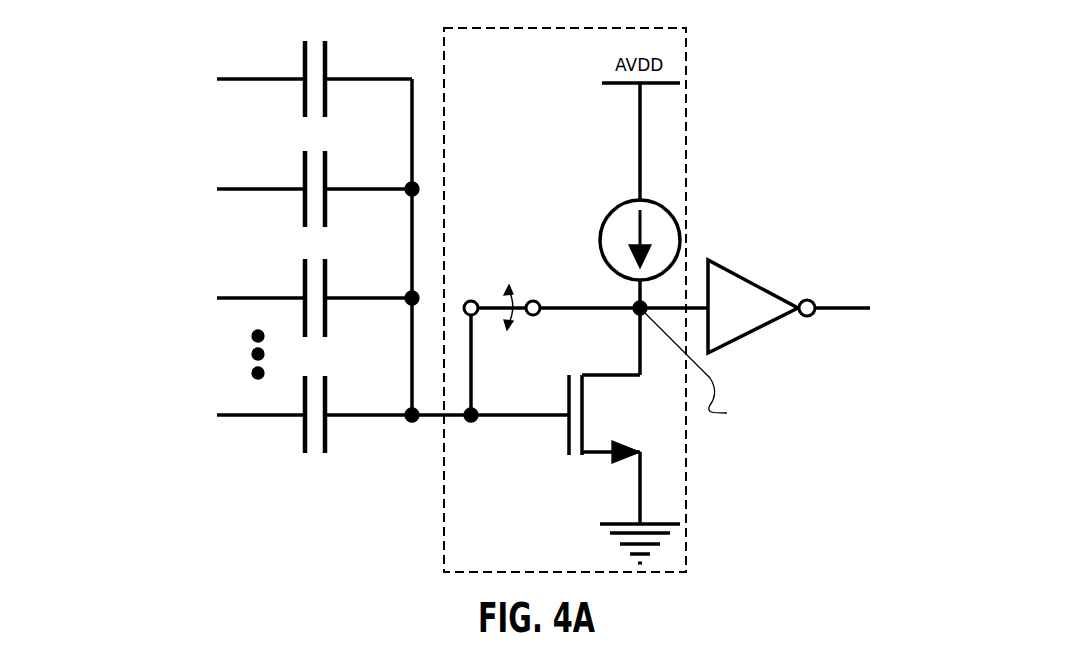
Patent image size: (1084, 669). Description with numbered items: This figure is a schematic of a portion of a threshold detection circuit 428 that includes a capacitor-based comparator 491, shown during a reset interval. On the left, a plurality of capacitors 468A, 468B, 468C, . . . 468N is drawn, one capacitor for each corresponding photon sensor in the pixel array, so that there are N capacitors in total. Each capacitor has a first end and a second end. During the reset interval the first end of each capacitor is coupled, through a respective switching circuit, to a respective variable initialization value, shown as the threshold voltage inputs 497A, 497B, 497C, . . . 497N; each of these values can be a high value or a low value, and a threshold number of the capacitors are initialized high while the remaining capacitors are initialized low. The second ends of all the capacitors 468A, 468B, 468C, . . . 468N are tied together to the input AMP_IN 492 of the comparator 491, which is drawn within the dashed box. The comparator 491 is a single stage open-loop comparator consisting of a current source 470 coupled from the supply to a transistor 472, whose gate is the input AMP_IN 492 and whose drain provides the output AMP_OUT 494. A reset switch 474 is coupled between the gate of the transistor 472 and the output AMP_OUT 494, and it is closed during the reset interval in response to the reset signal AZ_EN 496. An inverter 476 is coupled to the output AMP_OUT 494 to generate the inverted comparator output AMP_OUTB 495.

The threshold detection circuit 428 is at (918, 32).
The variable initialization value VTH[0] 497A is at (148, 60).
The variable initialization value VTH[1] 497B is at (148, 172).
The variable initialization value VTH[2] 497C is at (148, 282).
The variable initialization value VTH[N-1] 497N is at (146, 400).
The capacitor 468A is at (328, 53).
The capacitor 468B is at (328, 163).
The capacitor 468C is at (328, 270).
The capacitor 468N is at (328, 382).
The comparator 491 is at (688, 135).
The current source 470 is at (608, 212).
The reset switch 474 is at (505, 302).
The reset signal AZ_EN 496 is at (545, 343).
The transistor 472 is at (597, 460).
The input AMP_IN 492 is at (504, 456).
The inverter 476 is at (745, 275).
The inverted output AMP_OUTB 495 is at (862, 272).
The output AMP_OUT 494 is at (828, 418).